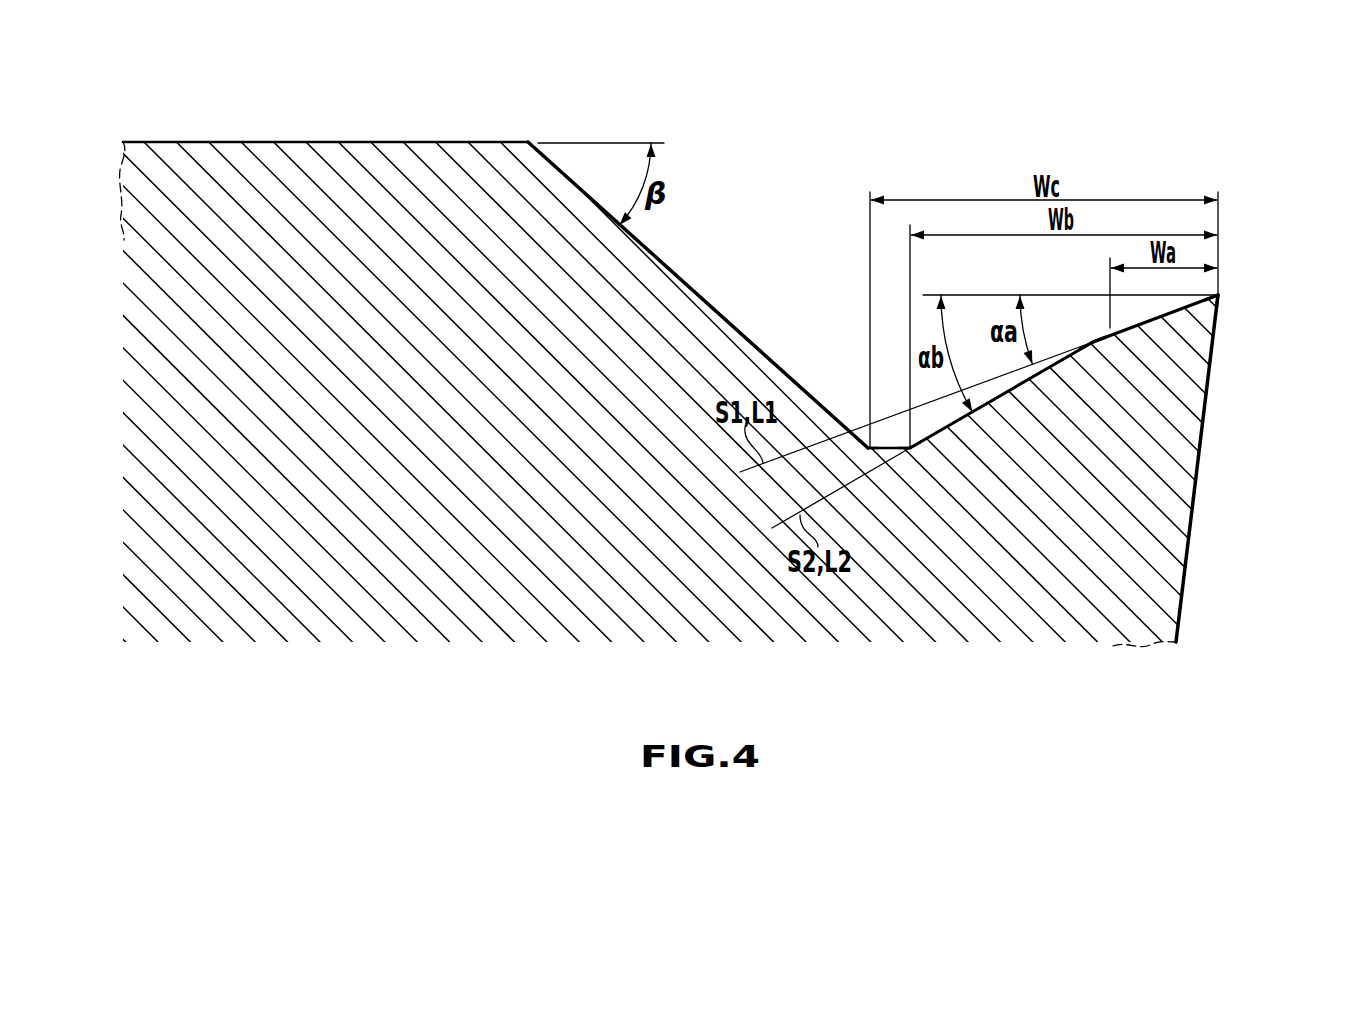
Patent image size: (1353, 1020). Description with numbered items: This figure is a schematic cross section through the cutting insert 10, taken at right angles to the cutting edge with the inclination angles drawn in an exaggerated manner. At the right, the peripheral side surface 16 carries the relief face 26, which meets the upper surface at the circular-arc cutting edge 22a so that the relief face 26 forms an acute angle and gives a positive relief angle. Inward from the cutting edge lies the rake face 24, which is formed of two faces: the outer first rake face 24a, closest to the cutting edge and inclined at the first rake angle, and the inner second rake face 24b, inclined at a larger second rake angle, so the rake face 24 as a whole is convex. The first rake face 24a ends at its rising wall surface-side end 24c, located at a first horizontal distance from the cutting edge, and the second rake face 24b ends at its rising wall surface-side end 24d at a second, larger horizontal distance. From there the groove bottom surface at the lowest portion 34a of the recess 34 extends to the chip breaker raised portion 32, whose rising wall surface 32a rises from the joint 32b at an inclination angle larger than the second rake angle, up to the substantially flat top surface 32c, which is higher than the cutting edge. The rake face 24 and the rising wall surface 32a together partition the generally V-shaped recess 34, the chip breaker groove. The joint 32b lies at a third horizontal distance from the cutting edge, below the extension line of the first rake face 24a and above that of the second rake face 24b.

The cutting insert 10 is at (1128, 29).
The peripheral side surface 16 is at (1173, 563).
The circular-arc cutting edge 22a is at (1222, 293).
The rake face 24 is at (1058, 385).
The first rake face 24a is at (1160, 315).
The second rake face 24b is at (1018, 385).
The rising wall surface-side end of the first rake face 24c is at (1098, 340).
The rising wall surface-side end of the second rake face 24d is at (910, 452).
The relief face 26 is at (1208, 373).
The chip breaker raised portion 32 is at (500, 292).
The rising wall surface 32a is at (727, 318).
The joint 32b is at (869, 451).
The top surface 32c is at (297, 142).
The recess 34 is at (846, 326).
The lowest portion of the recess 34a is at (890, 452).